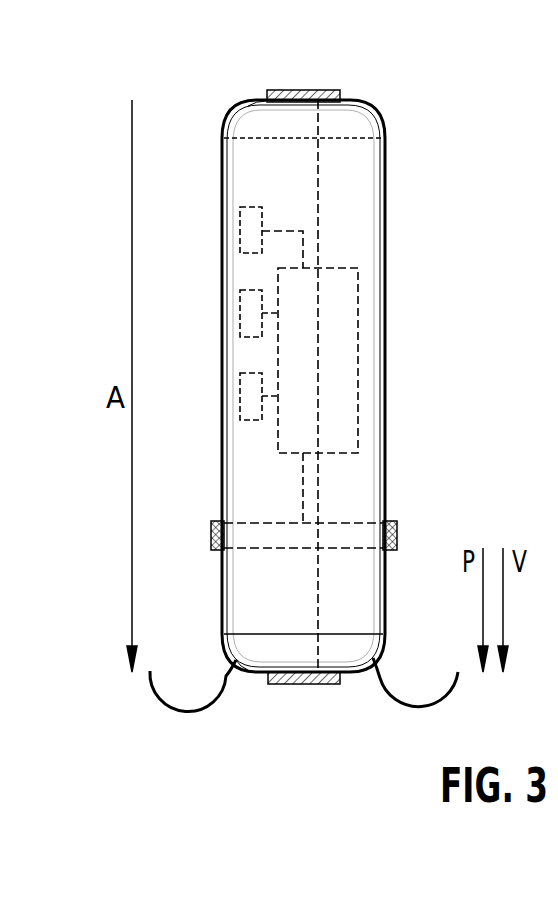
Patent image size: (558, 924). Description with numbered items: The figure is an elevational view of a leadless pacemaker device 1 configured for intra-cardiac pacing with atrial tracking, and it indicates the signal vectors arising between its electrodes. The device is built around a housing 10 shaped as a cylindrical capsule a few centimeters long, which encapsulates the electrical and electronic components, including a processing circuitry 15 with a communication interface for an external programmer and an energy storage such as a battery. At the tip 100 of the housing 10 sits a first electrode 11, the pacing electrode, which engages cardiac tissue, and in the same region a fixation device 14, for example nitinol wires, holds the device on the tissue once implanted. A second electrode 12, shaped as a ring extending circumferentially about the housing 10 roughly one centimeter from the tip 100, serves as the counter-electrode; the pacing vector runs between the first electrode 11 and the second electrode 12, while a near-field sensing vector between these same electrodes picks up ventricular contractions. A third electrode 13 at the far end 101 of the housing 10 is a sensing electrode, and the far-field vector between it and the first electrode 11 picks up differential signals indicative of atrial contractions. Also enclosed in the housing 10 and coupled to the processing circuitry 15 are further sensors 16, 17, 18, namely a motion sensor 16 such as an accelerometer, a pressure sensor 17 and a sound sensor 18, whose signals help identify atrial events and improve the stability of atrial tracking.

The leadless pacemaker device 1 is at (415, 162).
The housing 10 is at (375, 314).
The tip 100 is at (243, 668).
The far end 101 is at (262, 100).
The first electrode 11 is at (303, 686).
The second electrode 12 is at (398, 535).
The third electrode 13 is at (302, 90).
The fixation device 14 is at (150, 695).
The processing circuitry 15 is at (358, 368).
The sensor 16 is at (240, 231).
The sensor 17 is at (240, 316).
The sensor 18 is at (240, 399).